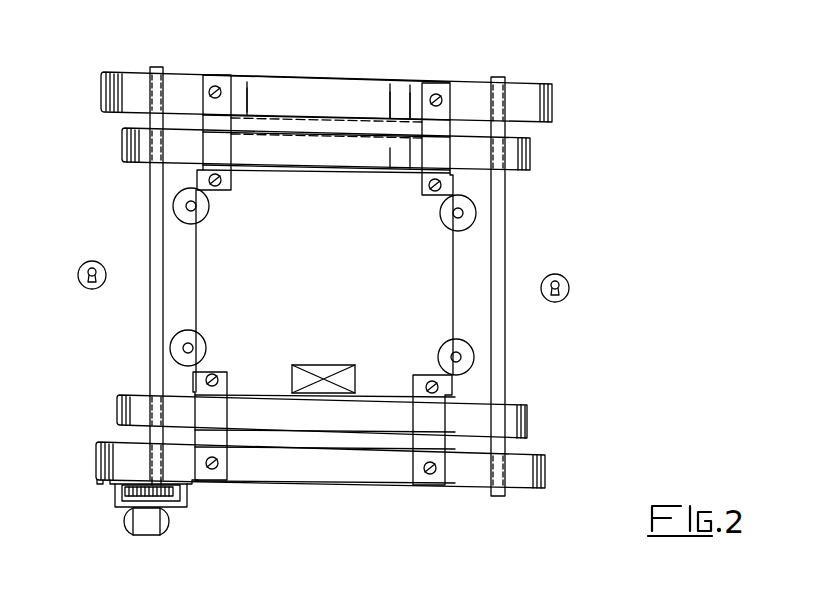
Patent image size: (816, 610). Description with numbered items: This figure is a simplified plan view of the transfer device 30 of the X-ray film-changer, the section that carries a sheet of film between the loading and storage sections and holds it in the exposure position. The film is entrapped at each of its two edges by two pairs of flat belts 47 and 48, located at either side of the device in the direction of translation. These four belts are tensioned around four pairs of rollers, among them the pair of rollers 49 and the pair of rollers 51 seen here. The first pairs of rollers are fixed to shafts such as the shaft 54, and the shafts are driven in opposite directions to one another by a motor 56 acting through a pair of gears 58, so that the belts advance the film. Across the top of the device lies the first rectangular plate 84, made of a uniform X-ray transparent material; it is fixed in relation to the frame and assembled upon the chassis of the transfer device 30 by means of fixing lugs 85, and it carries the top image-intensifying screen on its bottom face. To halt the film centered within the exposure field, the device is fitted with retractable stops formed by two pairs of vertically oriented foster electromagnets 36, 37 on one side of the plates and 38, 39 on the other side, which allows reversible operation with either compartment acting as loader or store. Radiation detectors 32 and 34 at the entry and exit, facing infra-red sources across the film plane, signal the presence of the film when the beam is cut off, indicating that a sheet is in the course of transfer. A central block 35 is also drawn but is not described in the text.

The transfer device 30 is at (377, 474).
The radiation detector 32 is at (77, 274).
The radiation detector 34 is at (570, 285).
The mounting block 35 is at (323, 383).
The foster electromagnet 36 is at (178, 345).
The foster electromagnet 37 is at (183, 222).
The foster electromagnet 38 is at (478, 376).
The foster electromagnet 39 is at (476, 200).
The flat belts 47 is at (250, 415).
The flat belts 48 is at (343, 145).
The pair of rollers 49 is at (115, 153).
The pair of rollers 51 is at (536, 150).
The shaft 54 is at (148, 357).
The motor 56 is at (148, 530).
The pair of gears 58 is at (125, 487).
The first rectangular plate 84 is at (297, 193).
The fixing lugs 85 is at (220, 118).